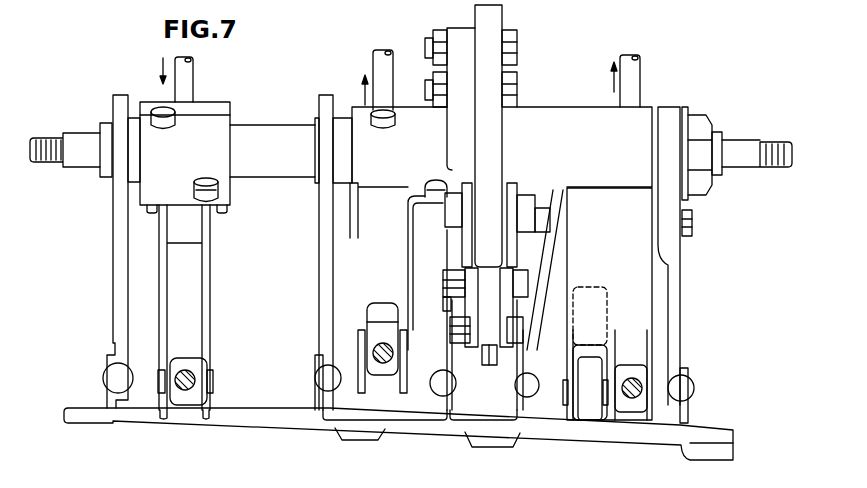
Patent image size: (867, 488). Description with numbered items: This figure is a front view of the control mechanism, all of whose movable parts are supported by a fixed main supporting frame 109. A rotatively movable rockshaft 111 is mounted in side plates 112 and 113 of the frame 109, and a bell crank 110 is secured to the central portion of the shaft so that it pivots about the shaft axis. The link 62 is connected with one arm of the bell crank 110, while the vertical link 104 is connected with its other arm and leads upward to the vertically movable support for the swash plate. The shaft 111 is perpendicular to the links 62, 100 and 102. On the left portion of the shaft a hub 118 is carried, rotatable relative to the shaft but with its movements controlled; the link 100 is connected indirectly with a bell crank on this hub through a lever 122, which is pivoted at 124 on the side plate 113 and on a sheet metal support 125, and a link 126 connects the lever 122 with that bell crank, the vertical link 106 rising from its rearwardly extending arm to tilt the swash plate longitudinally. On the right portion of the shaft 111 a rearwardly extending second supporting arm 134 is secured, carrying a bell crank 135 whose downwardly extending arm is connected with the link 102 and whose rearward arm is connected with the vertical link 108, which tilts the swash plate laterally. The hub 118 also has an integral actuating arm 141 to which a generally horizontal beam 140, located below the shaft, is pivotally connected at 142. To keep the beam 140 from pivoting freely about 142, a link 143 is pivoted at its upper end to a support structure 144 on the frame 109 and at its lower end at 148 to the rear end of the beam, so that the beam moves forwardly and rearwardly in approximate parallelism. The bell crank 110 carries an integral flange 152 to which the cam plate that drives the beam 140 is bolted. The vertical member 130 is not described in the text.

The link 62 is at (385, 362).
The link 100 is at (632, 400).
The link 102 is at (192, 377).
The vertical link 104 is at (380, 72).
The vertical link 106 is at (635, 85).
The vertical link 108 is at (188, 80).
The main supporting frame 109 is at (252, 418).
The bell crank 110 is at (365, 283).
The rockshaft 111 is at (277, 128).
The side plate 112 is at (113, 233).
The side plate 113 is at (675, 272).
The hub 118 is at (548, 125).
The lever 122 is at (568, 287).
The pivot 124 is at (695, 222).
The sheet metal support 125 is at (547, 277).
The link 126 is at (590, 415).
The vertical bar 130 is at (497, 20).
The second supporting arm 134 is at (224, 108).
The bell crank 135 is at (211, 258).
The beam 140 is at (490, 340).
The actuating arm 141 is at (470, 298).
The pivot axis 142 is at (443, 280).
The link 143 is at (498, 365).
The support structure 144 is at (447, 305).
The pivot 148 is at (450, 333).
The integral flange 152 is at (460, 37).